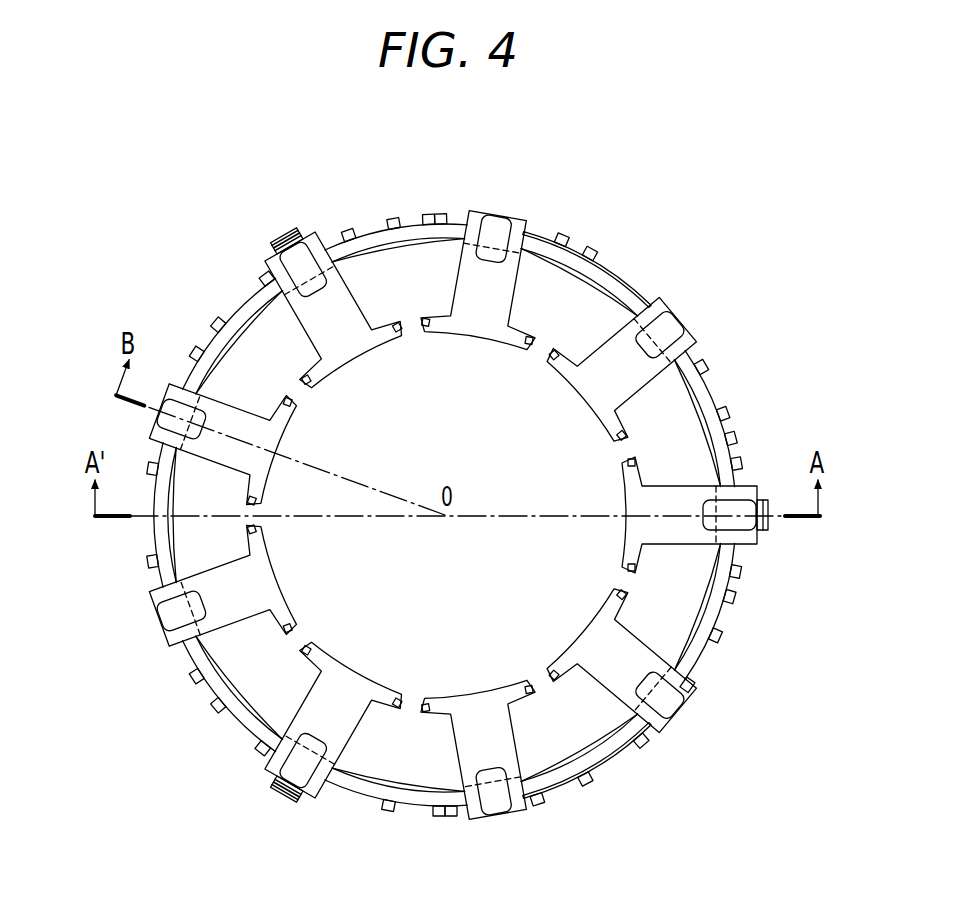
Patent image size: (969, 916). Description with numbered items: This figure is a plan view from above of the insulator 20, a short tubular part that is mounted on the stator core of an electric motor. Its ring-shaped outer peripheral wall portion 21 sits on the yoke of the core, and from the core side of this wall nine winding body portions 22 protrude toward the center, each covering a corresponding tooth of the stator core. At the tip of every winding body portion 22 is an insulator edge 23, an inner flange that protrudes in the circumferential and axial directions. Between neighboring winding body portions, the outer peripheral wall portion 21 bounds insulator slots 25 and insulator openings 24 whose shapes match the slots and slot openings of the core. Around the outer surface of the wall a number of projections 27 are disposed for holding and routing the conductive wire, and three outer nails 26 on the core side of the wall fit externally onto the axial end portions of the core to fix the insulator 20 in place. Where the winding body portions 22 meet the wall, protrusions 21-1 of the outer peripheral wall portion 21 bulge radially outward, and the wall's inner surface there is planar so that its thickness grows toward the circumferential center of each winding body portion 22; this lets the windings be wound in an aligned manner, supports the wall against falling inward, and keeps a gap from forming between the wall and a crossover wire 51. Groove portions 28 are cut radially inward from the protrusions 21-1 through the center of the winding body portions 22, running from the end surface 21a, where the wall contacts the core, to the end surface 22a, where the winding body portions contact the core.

The insulator 20 is at (742, 767).
The outer peripheral wall portion 21 is at (338, 238).
The protrusions 21-1 is at (298, 240).
The end surface 21a is at (262, 272).
The winding body portion 22 is at (522, 738).
The end surface 22a is at (347, 335).
The insulator edge 23 is at (498, 335).
The insulator opening 24 is at (622, 442).
The insulator slot 25 is at (240, 325).
The outer nail 26 is at (280, 232).
The projection 27 is at (563, 238).
The groove portion 28 is at (182, 412).
The crossover wire 51 is at (633, 290).